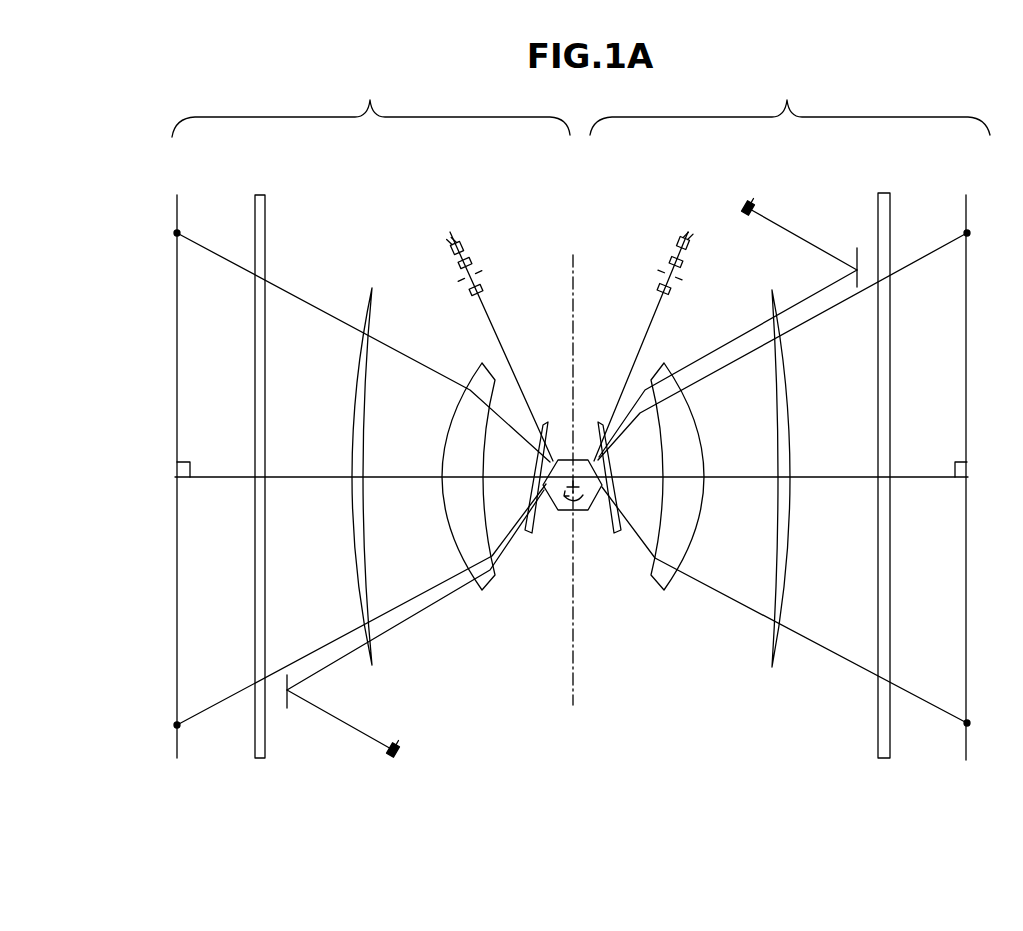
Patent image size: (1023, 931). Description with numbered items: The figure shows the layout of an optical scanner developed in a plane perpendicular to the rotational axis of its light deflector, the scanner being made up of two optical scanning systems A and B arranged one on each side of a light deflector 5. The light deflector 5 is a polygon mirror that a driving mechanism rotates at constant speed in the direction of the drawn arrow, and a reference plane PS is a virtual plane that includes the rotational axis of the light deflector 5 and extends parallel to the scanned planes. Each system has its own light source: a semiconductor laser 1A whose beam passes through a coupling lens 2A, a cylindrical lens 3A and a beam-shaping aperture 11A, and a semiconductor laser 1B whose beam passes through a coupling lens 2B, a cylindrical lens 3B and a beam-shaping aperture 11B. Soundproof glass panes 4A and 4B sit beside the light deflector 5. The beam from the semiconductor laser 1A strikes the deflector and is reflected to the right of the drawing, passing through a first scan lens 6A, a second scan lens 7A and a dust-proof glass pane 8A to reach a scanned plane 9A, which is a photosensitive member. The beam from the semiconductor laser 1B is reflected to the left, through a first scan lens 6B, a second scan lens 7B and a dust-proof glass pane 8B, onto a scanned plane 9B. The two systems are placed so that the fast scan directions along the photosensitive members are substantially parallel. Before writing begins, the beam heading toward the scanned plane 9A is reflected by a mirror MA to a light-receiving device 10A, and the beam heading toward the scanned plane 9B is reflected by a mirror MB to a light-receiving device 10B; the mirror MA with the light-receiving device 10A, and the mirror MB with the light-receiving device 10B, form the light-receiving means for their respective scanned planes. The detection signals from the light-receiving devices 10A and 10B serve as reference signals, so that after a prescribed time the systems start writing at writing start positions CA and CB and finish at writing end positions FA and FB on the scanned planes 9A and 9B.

The semiconductor laser 1A is at (683, 240).
The coupling lens 2A is at (673, 262).
The cylindrical lens 3A is at (663, 290).
The soundproof glass pane 4A is at (612, 540).
The light deflector 5 is at (573, 463).
The first scan lens 6A is at (655, 585).
The second scan lens 7A is at (768, 665).
The dust-proof glass pane 8A is at (883, 760).
The scanned plane 9A is at (966, 760).
The light-receiving device 10A is at (748, 205).
The beam-shaping aperture 11A is at (690, 283).
The semiconductor laser 1B is at (457, 240).
The coupling lens 2B is at (470, 262).
The cylindrical lens 3B is at (483, 290).
The soundproof glass pane 4B is at (532, 540).
The first scan lens 6B is at (492, 585).
The second scan lens 7B is at (372, 665).
The dust-proof glass pane 8B is at (262, 760).
The scanned plane 9B is at (177, 760).
The light-receiving device 10B is at (393, 752).
The beam-shaping aperture 11B is at (460, 283).
The mirror MA is at (855, 250).
The mirror MB is at (290, 710).
The reference plane PS is at (573, 685).
The writing end position FA is at (967, 723).
The writing start position CA is at (967, 233).
The writing end position FB is at (177, 233).
The writing start position CB is at (177, 725).
The optical scanning system A is at (790, 103).
The optical scanning system B is at (371, 104).